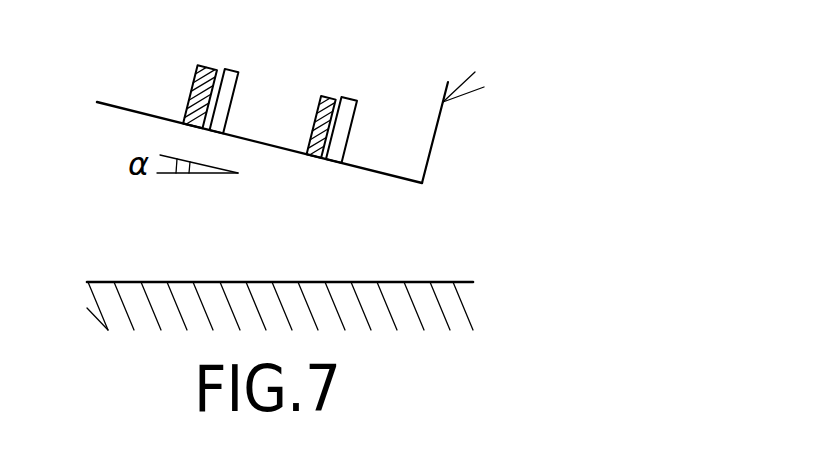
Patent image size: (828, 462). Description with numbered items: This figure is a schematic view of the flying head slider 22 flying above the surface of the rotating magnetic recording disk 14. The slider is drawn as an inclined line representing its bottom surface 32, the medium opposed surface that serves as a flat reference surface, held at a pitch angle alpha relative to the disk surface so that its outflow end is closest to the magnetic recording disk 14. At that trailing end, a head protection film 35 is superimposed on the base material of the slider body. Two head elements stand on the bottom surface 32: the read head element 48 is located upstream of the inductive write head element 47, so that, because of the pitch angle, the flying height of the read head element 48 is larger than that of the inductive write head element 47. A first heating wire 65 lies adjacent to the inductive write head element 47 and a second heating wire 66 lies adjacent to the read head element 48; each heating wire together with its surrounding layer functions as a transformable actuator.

The magnetic recording disk 14 is at (98, 282).
The flying head slider 22 is at (443, 102).
The bottom surface 32 is at (122, 109).
The head protection film 35 is at (424, 179).
The inductive write head element 47 is at (352, 135).
The read head element 48 is at (230, 110).
The first heating wire 65 is at (321, 94).
The second heating wire 66 is at (204, 64).